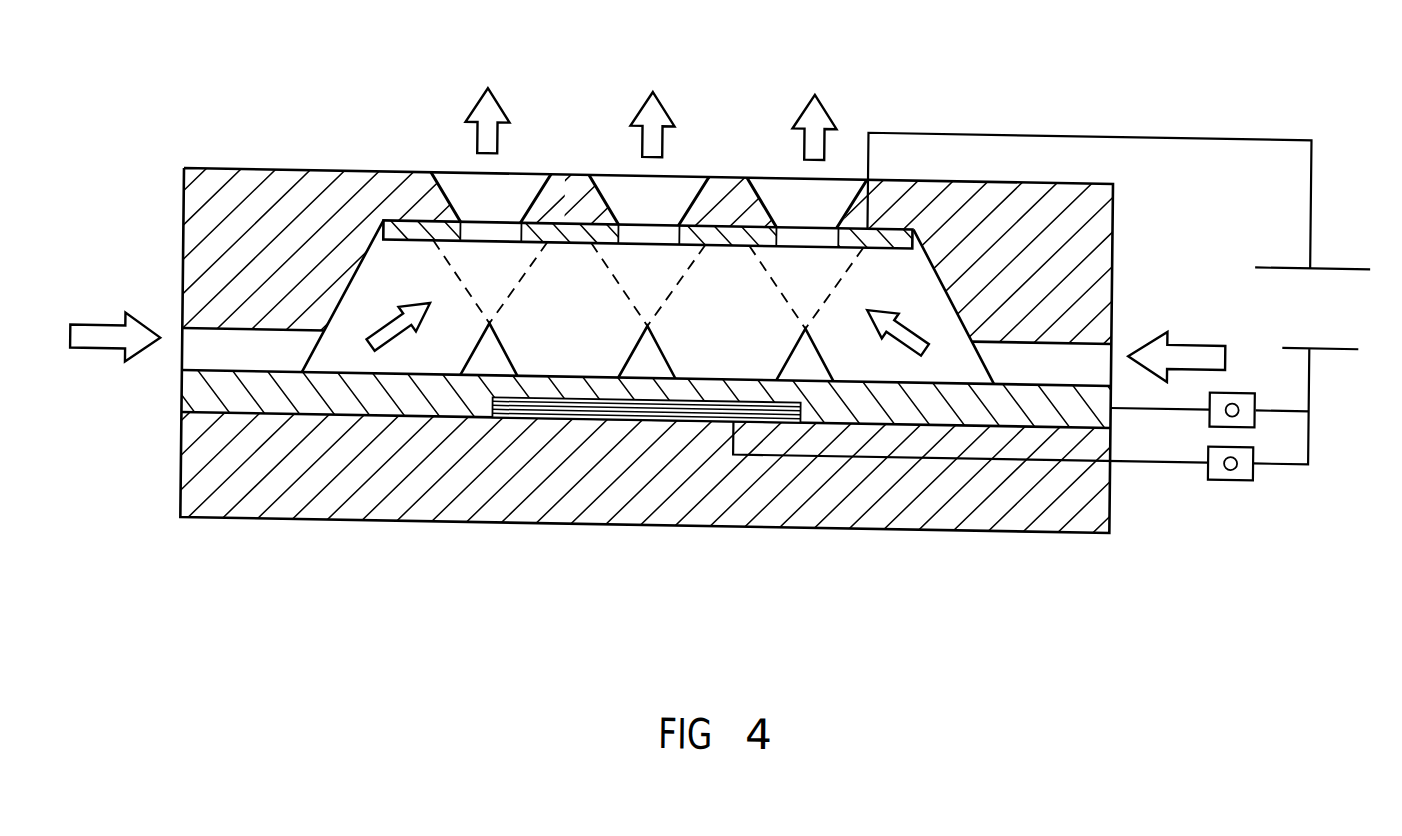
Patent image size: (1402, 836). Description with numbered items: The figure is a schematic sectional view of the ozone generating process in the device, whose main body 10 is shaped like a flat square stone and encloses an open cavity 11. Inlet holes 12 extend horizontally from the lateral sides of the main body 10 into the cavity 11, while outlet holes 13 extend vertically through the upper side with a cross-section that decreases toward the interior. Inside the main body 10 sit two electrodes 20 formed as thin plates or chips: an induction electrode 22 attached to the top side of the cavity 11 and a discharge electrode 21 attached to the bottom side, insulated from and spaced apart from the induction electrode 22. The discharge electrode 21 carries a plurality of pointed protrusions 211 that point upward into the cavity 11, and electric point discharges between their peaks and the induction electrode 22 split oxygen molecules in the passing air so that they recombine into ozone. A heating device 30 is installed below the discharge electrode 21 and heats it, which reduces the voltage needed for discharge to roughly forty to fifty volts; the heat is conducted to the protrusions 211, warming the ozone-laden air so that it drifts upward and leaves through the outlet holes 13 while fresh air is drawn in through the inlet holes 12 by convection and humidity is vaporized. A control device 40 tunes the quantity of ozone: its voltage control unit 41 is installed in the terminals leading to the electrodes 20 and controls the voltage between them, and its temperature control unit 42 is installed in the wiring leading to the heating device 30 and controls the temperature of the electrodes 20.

The main body 10 is at (398, 148).
The cavity 11 is at (725, 339).
The inlet holes 12 is at (1067, 347).
The outlet holes 13 is at (513, 180).
The electrodes 20 is at (167, 390).
The discharge electrode 21 is at (444, 393).
The pointed protrusions 211 is at (492, 347).
The induction electrode 22 is at (763, 225).
The heating device 30 is at (670, 395).
The control device 40 is at (1219, 492).
The voltage control unit 41 is at (1253, 397).
The temperature control unit 42 is at (1248, 460).